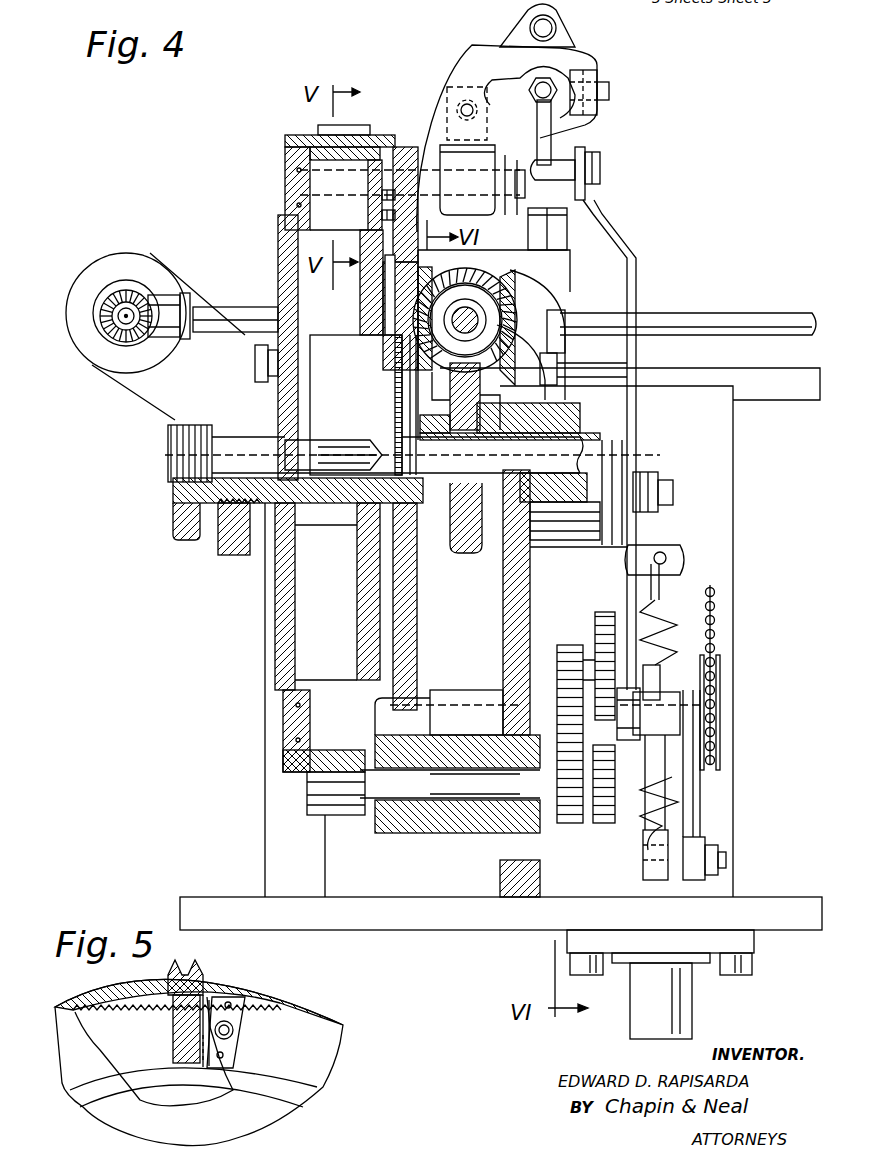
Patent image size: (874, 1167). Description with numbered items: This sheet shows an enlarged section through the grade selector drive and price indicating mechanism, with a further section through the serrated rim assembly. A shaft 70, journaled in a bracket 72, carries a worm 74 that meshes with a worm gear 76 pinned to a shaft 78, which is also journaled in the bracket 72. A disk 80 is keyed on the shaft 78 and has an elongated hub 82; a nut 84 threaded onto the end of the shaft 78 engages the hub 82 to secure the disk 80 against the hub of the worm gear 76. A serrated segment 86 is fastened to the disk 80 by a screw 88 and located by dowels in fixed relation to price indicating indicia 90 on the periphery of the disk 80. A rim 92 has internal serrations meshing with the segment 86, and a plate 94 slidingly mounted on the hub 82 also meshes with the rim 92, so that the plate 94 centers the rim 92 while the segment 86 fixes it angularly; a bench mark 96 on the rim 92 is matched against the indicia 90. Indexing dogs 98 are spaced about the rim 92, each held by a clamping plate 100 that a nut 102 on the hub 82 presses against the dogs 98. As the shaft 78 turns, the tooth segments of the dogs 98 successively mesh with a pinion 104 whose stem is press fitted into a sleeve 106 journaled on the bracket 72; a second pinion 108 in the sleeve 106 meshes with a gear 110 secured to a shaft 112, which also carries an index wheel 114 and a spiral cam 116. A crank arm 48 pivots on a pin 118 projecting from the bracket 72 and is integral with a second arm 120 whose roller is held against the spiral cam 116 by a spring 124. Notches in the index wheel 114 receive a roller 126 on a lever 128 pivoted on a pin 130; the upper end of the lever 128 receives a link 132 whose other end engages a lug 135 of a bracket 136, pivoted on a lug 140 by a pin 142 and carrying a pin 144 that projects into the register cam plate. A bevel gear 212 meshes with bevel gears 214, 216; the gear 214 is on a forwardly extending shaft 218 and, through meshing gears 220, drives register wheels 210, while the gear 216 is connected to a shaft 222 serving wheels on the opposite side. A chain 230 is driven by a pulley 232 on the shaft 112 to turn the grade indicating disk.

In FIG. 4, the crank arm 48 is at (668, 832).
In FIG. 4, the shaft 70 is at (490, 324).
In FIG. 4, the bracket 72 is at (560, 366).
In FIG. 4, the worm 74 is at (525, 328).
In FIG. 4, the worm gear 76 is at (466, 556).
In FIG. 4, the shaft 78 is at (168, 468).
In FIG. 4, the disk 80 is at (418, 652).
In FIG. 5, the disk 80 is at (318, 1088).
In FIG. 4, the hub 82 is at (308, 522).
In FIG. 4, the nut 84 is at (178, 547).
In FIG. 4, the serrated segment 86 is at (385, 216).
In FIG. 5, the serrated segment 86 is at (237, 1055).
In FIG. 4, the screw 88 is at (385, 196).
In FIG. 5, the screw 88 is at (236, 1032).
In FIG. 4, the price indicating indicia 90 is at (398, 376).
In FIG. 4, the rim 92 is at (400, 147).
In FIG. 5, the rim 92 is at (275, 1002).
In FIG. 4, the plate 94 is at (372, 302).
In FIG. 5, the plate 94 is at (100, 1048).
In FIG. 4, the bench mark 96 is at (380, 350).
In FIG. 4, the indexing dogs 98 is at (292, 134).
In FIG. 5, the indexing dogs 98 is at (168, 1000).
In FIG. 4, the clamping plate 100 is at (278, 225).
In FIG. 4, the nut 102 is at (226, 558).
In FIG. 4, the pinion 104 is at (312, 812).
In FIG. 4, the sleeve 106 is at (388, 834).
In FIG. 4, the second pinion 108 is at (594, 806).
In FIG. 4, the gear 110 is at (585, 645).
In FIG. 4, the shaft 112 is at (445, 690).
In FIG. 4, the index wheel 114 is at (605, 612).
In FIG. 4, the spiral cam 116 is at (668, 662).
In FIG. 4, the pin 118 is at (727, 864).
In FIG. 4, the second arm 120 is at (700, 810).
In FIG. 4, the spring 124 is at (678, 795).
In FIG. 4, the roller 126 is at (615, 748).
In FIG. 4, the lever 128 is at (614, 234).
In FIG. 4, the pin 130 is at (674, 498).
In FIG. 4, the link 132 is at (601, 166).
In FIG. 4, the lug 135 is at (596, 60).
In FIG. 4, the bracket 136 is at (463, 64).
In FIG. 4, the lug 140 is at (497, 152).
In FIG. 4, the pin 142 is at (525, 182).
In FIG. 4, the pin 144 is at (558, 30).
In FIG. 4, the register wheels 210 is at (72, 265).
In FIG. 4, the bevel gear 212 is at (480, 268).
In FIG. 4, the bevel gear 214 is at (422, 269).
In FIG. 4, the bevel gear 216 is at (522, 288).
In FIG. 4, the shaft 218 is at (222, 307).
In FIG. 4, the meshing gears 220 is at (156, 292).
In FIG. 4, the shaft 222 is at (722, 314).
In FIG. 4, the chain 230 is at (718, 596).
In FIG. 4, the pulley 232 is at (722, 684).